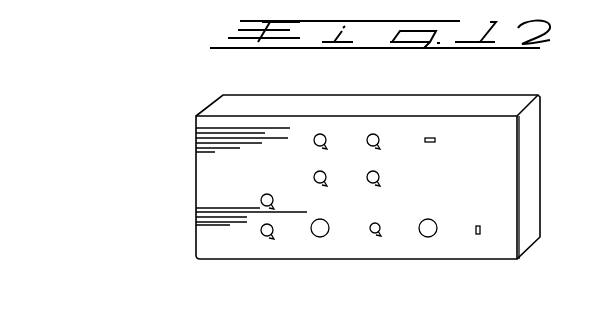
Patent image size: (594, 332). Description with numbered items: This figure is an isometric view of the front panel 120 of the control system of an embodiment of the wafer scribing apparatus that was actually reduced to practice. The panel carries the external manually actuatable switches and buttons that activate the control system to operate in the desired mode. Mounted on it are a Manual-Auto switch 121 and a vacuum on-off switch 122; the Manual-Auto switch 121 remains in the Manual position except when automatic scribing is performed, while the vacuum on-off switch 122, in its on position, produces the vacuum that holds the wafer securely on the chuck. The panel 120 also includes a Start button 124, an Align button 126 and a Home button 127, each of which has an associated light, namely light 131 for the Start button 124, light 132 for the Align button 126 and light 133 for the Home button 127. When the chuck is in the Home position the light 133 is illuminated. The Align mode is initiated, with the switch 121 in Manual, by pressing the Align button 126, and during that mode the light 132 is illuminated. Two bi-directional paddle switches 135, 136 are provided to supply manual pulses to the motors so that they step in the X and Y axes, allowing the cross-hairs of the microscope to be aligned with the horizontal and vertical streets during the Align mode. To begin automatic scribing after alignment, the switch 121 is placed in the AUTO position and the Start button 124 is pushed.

The front panel 120 is at (468, 130).
The Manual-Auto switch 121 is at (430, 138).
The vacuum on-off switch 122 is at (481, 234).
The Start button 124 is at (373, 134).
The Align button 126 is at (318, 134).
The Home button 127 is at (261, 231).
The light 131 is at (380, 179).
The light 132 is at (314, 176).
The light 133 is at (261, 202).
The bi-directional paddle switch 135 is at (437, 230).
The bi-directional paddle switch 136 is at (313, 221).